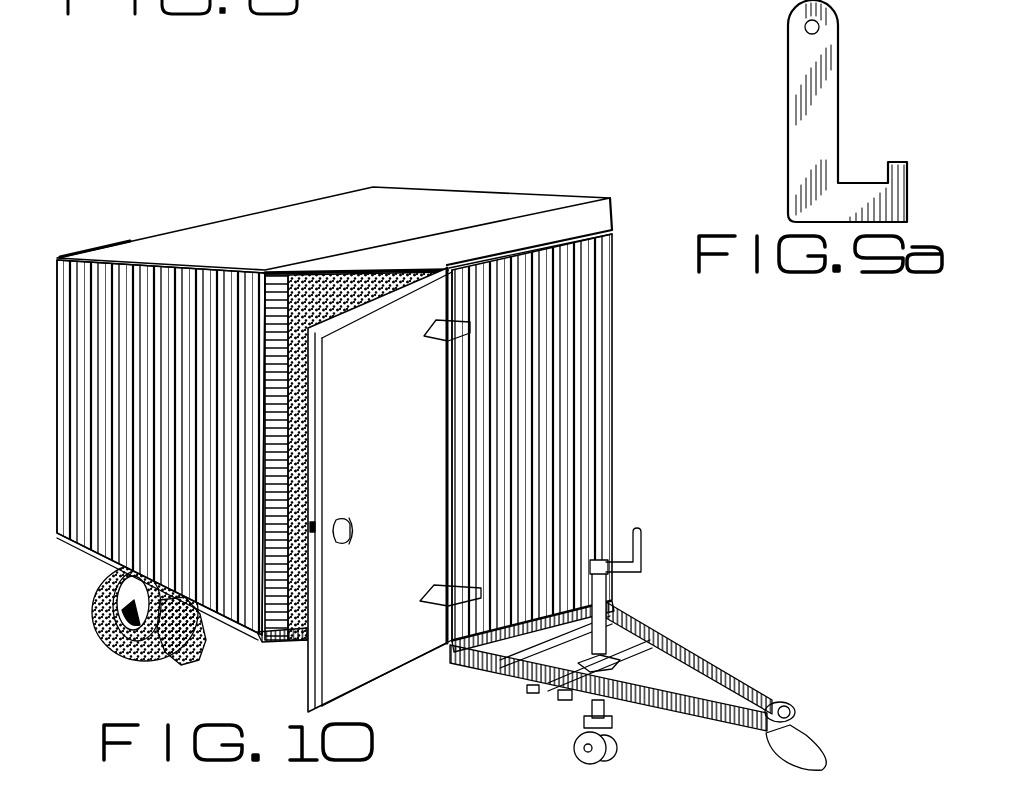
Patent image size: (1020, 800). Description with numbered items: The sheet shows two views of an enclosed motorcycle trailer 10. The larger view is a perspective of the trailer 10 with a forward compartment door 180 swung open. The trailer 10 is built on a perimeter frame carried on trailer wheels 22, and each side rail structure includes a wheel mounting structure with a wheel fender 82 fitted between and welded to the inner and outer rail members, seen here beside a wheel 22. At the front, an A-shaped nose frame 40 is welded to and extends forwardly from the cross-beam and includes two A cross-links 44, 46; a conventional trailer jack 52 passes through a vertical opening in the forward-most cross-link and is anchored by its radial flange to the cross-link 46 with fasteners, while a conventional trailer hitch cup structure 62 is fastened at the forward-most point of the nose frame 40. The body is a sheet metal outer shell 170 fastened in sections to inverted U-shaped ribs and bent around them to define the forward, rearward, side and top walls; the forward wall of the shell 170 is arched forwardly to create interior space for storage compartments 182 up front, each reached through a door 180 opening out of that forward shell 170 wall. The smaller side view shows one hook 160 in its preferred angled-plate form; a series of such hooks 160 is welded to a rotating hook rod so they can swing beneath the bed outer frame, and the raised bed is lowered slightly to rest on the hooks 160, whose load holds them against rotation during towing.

In FIG. 10, the trailer 10 is at (459, 478).
In FIG. 10, the trailer wheels 22 is at (118, 648).
In FIG. 10, the A-shaped nose frame 40 is at (770, 704).
In FIG. 10, the A cross-link 44 is at (640, 650).
In FIG. 10, the A cross-link 46 is at (507, 643).
In FIG. 10, the trailer jack 52 is at (645, 568).
In FIG. 10, the trailer hitch cup structure 62 is at (806, 733).
In FIG. 10, the wheel fender 82 is at (186, 652).
In FIG. 9a, the hook 160 is at (762, 80).
In FIG. 10, the sheet metal outer shell 170 is at (142, 313).
In FIG. 10, the door 180 is at (392, 508).
In FIG. 10, the storage compartment 182 is at (253, 640).